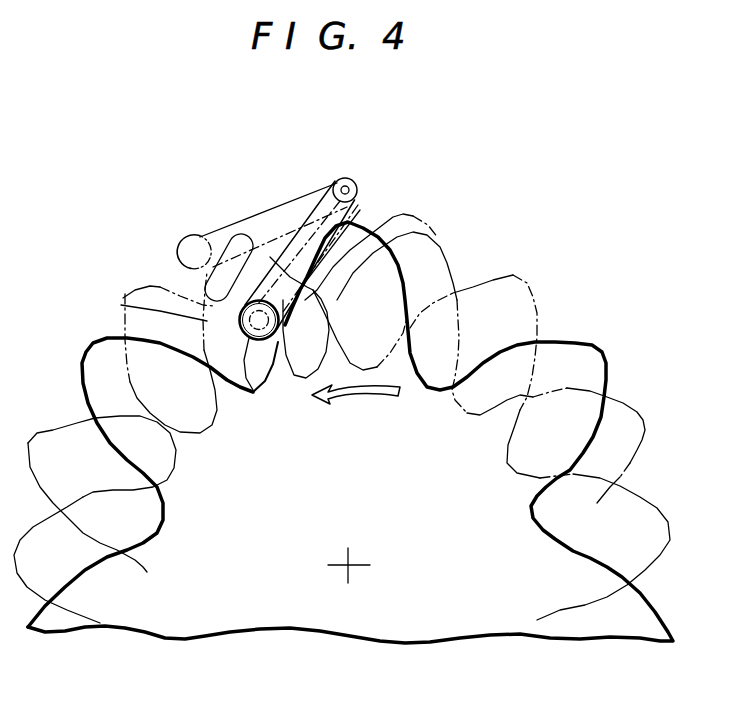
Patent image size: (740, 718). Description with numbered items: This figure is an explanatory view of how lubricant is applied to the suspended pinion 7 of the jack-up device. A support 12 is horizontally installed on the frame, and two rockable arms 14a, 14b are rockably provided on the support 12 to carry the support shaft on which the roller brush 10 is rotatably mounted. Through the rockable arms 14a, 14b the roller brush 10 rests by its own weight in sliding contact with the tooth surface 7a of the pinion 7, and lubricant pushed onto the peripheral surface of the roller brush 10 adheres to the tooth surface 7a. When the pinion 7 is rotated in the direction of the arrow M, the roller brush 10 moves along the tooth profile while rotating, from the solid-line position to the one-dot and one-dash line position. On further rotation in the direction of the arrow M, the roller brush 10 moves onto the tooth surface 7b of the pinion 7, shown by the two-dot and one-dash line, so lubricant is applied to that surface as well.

The pinion 7 is at (607, 364).
The tooth surface 7a is at (123, 298).
The tooth surface 7b is at (160, 287).
The roller brush 10 is at (193, 233).
The support 12 is at (347, 178).
The rockable arm 14a is at (348, 239).
The rockable arm 14b is at (358, 187).
The arrow M is at (370, 402).